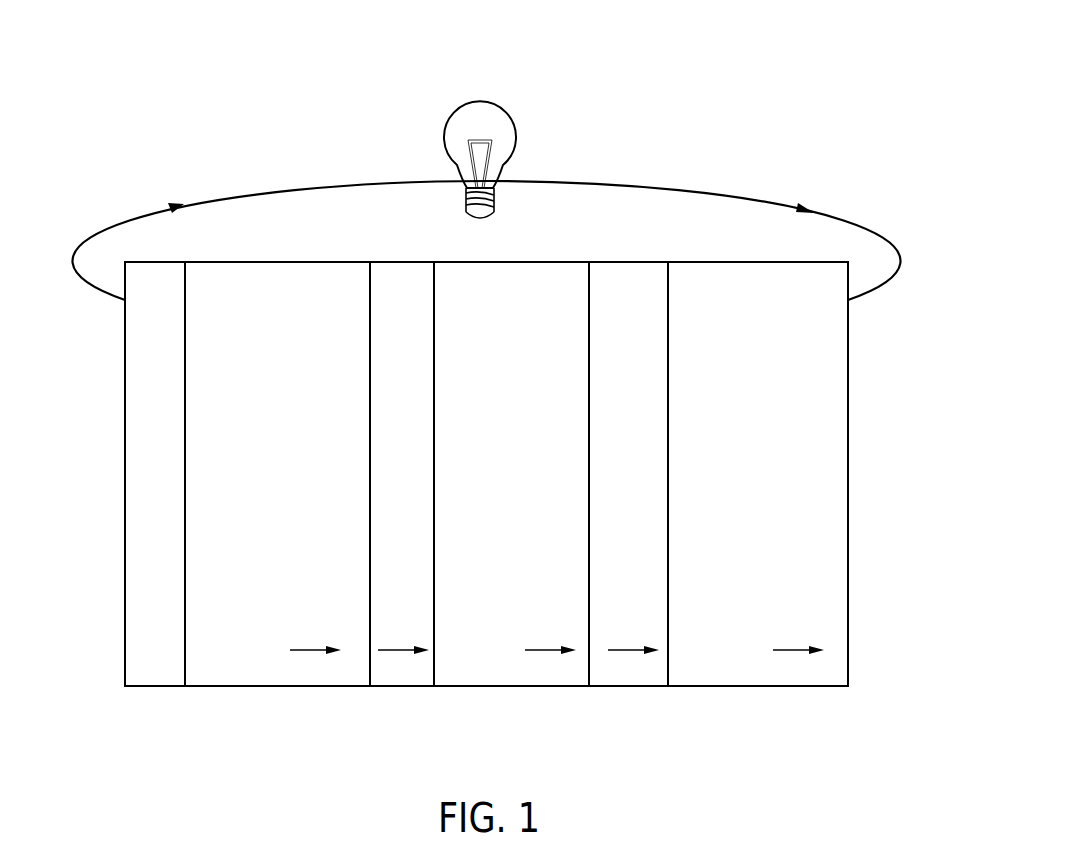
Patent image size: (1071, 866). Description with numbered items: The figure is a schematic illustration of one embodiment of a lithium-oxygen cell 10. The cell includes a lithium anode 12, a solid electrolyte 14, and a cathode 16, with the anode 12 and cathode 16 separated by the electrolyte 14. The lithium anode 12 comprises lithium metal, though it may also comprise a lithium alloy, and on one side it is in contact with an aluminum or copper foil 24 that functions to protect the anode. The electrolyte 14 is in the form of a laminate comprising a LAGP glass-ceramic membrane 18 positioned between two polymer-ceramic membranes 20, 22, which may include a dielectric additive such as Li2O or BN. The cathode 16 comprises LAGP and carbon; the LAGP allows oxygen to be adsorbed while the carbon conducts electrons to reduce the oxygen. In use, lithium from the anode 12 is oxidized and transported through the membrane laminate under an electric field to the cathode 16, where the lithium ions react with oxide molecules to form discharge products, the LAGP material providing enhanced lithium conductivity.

The lithium-oxygen cell 10 is at (486, 353).
The lithium anode 12 is at (368, 695).
The electrolyte 14 is at (667, 695).
The cathode 16 is at (845, 695).
The LAGP glass-ceramic membrane 18 is at (547, 262).
The polymer-ceramic membrane 20 is at (410, 262).
The polymer-ceramic membrane 22 is at (640, 262).
The aluminum or copper foil 24 is at (125, 380).